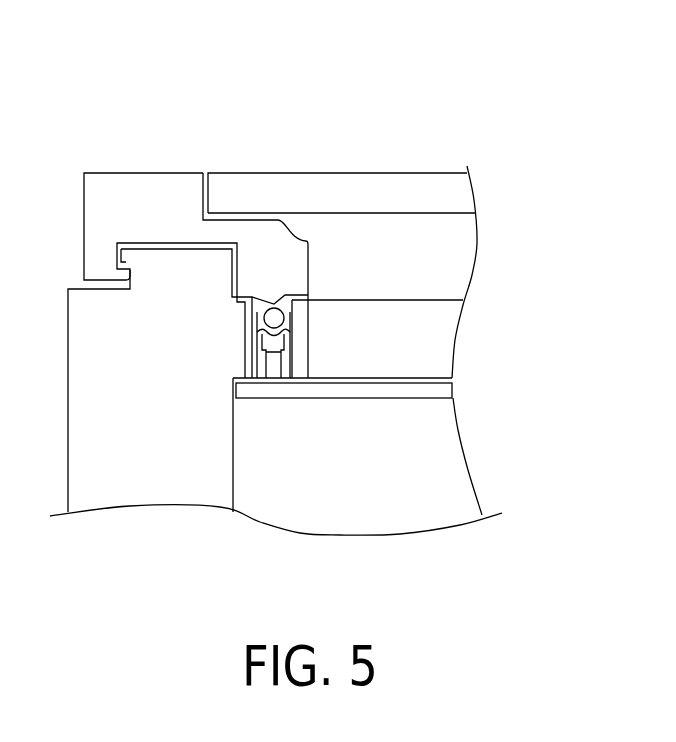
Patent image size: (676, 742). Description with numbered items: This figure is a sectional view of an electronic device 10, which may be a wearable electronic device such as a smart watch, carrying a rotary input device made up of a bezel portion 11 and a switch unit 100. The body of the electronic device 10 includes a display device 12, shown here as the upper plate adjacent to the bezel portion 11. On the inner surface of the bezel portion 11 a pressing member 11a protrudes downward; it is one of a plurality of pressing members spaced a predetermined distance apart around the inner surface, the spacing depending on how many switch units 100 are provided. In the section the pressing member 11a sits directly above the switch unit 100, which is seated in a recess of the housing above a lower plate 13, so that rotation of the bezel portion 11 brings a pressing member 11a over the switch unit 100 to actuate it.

The electronic device 10 is at (66, 53).
The bezel portion 11 is at (153, 200).
The pressing member 11a is at (273, 303).
The display device 12 is at (360, 192).
The circuit board 13 is at (390, 390).
The switch unit 100 is at (292, 343).